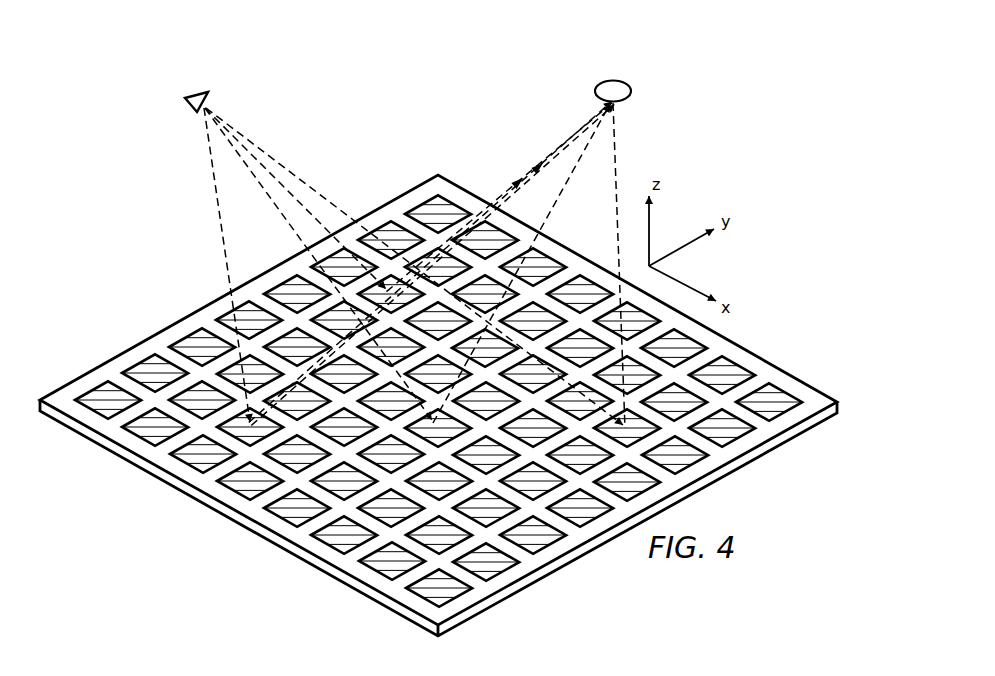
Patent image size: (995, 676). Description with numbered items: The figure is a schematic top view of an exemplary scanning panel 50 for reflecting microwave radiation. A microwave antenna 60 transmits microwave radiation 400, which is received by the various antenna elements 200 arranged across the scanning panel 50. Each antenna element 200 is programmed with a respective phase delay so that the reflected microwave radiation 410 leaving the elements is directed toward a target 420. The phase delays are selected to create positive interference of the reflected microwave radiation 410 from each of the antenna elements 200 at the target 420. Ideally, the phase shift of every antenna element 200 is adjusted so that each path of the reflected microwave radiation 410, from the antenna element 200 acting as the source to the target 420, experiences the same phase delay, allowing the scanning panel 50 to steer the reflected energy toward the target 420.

The scanning panel 50 is at (252, 524).
The microwave antenna 60 is at (184, 98).
The antenna element 200 is at (464, 596).
The microwave radiation 400 is at (218, 208).
The reflected microwave radiation 410 is at (510, 193).
The target 420 is at (632, 91).